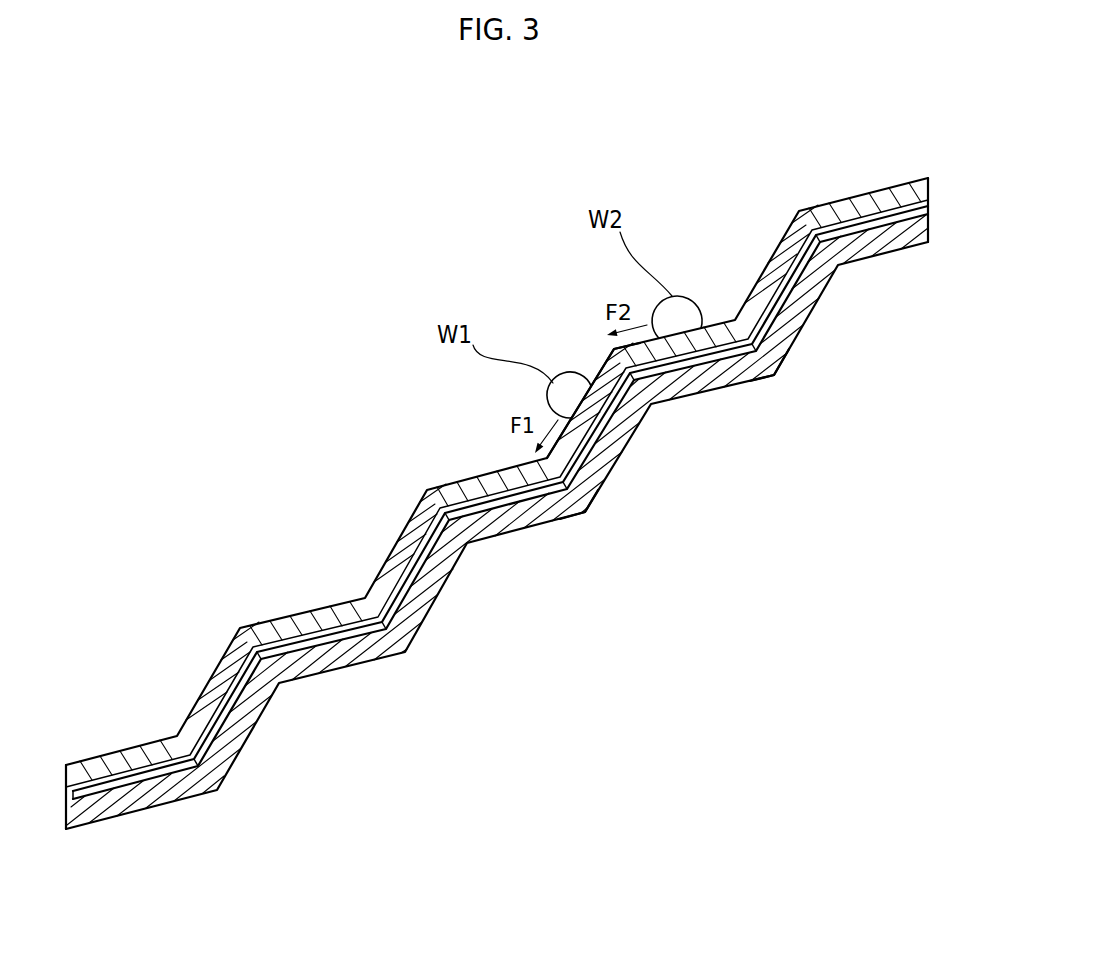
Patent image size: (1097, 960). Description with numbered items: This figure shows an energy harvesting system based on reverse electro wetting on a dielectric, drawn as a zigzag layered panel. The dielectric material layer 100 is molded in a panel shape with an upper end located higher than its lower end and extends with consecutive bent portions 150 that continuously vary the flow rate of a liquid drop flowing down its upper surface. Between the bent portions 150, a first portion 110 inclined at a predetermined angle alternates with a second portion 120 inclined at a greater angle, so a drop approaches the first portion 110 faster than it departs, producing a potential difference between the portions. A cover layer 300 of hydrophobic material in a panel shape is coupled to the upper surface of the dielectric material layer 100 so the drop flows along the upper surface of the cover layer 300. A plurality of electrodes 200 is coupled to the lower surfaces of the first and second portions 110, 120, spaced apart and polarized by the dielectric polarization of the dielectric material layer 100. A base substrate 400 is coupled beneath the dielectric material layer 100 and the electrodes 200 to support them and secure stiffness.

The dielectric material layer 100 is at (775, 225).
The first portion 110 is at (862, 210).
The second portion 120 is at (818, 310).
The bent portion 150 is at (605, 358).
The electrode 200 is at (687, 370).
The cover layer 300 is at (434, 486).
The base substrate 400 is at (773, 367).